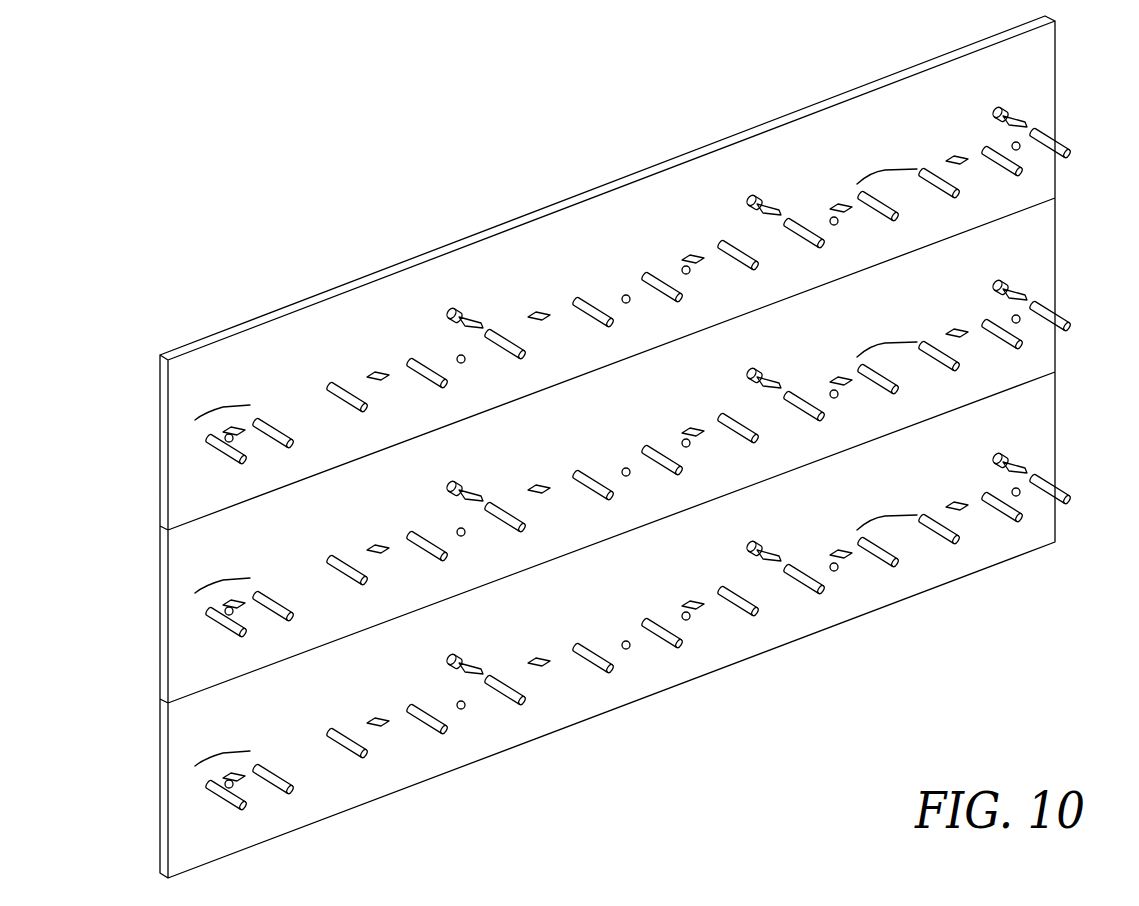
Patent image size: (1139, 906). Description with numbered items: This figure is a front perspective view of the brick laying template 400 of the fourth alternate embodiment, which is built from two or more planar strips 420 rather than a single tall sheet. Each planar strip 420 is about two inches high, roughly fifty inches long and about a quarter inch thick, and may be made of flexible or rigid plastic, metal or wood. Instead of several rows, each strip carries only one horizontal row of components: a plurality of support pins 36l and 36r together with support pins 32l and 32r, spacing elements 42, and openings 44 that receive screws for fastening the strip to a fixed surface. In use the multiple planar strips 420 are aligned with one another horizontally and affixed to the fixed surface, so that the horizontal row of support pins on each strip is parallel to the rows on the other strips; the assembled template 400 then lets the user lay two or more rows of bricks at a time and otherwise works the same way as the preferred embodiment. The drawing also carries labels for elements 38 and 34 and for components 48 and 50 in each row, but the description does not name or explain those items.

The brick laying template 400 is at (223, 283).
The planar strip 420 is at (178, 343).
The retention clip 38 is at (223, 407).
The spacing element 42 is at (379, 372).
The opening 44 is at (226, 436).
The support pin 36l is at (235, 463).
The support pin 36r is at (289, 445).
The cylindrical stud 48 is at (455, 309).
The blade contact 50 is at (472, 317).
The retention clip 34 is at (885, 170).
The support pin 32l is at (876, 208).
The support pin 32r is at (925, 181).